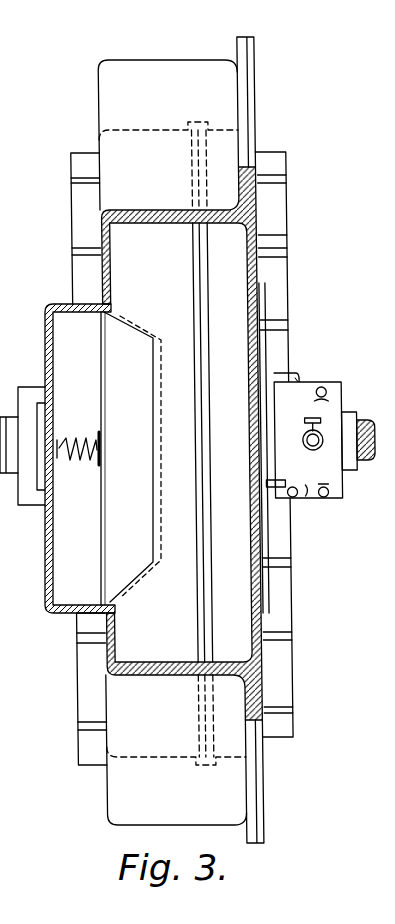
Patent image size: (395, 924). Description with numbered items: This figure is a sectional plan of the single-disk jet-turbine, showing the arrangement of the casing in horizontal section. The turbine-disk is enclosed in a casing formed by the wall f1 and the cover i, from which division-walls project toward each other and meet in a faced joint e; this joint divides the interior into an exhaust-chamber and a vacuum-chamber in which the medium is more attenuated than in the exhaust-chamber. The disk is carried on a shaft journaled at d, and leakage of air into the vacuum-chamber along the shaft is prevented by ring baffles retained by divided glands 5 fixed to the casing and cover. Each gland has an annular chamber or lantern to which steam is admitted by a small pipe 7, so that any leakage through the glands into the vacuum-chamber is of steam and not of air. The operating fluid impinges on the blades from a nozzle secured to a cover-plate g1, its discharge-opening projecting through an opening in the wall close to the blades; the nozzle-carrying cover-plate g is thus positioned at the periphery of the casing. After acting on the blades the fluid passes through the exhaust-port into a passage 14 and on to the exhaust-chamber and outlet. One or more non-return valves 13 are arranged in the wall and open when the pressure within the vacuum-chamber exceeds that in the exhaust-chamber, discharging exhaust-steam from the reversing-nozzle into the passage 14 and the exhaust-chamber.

The casing wall f1 is at (128, 662).
The faced joint e is at (193, 309).
The cover-plate g is at (152, 410).
The passage 14 is at (57, 458).
The non-return valve 13 is at (100, 425).
The cover i is at (283, 236).
The cover-plate g1 is at (283, 351).
The small pipe 7 is at (301, 434).
The divided gland 5 is at (331, 494).
The journal d is at (352, 466).